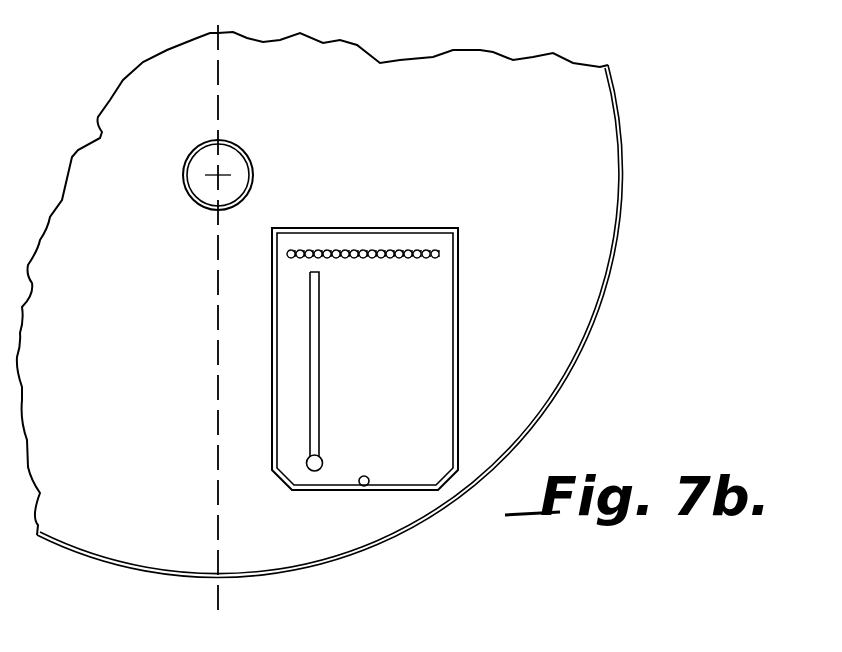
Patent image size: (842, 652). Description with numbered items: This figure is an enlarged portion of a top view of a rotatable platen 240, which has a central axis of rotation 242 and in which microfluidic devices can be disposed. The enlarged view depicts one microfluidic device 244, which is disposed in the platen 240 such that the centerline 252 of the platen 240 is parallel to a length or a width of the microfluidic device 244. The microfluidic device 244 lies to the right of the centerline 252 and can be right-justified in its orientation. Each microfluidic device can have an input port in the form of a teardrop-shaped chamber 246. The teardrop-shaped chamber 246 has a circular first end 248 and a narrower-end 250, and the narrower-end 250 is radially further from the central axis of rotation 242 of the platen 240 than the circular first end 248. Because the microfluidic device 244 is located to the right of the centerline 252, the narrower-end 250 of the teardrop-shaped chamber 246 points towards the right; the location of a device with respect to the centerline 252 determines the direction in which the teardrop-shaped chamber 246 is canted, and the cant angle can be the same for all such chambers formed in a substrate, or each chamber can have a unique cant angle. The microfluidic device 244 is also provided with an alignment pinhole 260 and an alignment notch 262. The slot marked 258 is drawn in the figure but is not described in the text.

The rotatable platen 240 is at (582, 305).
The central axis of rotation 242 is at (212, 176).
The microfluidic device 244 is at (438, 422).
The teardrop-shaped chamber 246 is at (386, 252).
The circular first end 248 is at (422, 250).
The narrower-end 250 is at (430, 255).
The centerline 252 is at (213, 267).
The slot 258 is at (310, 352).
The alignment pinhole 260 is at (359, 488).
The alignment notch 262 is at (367, 229).